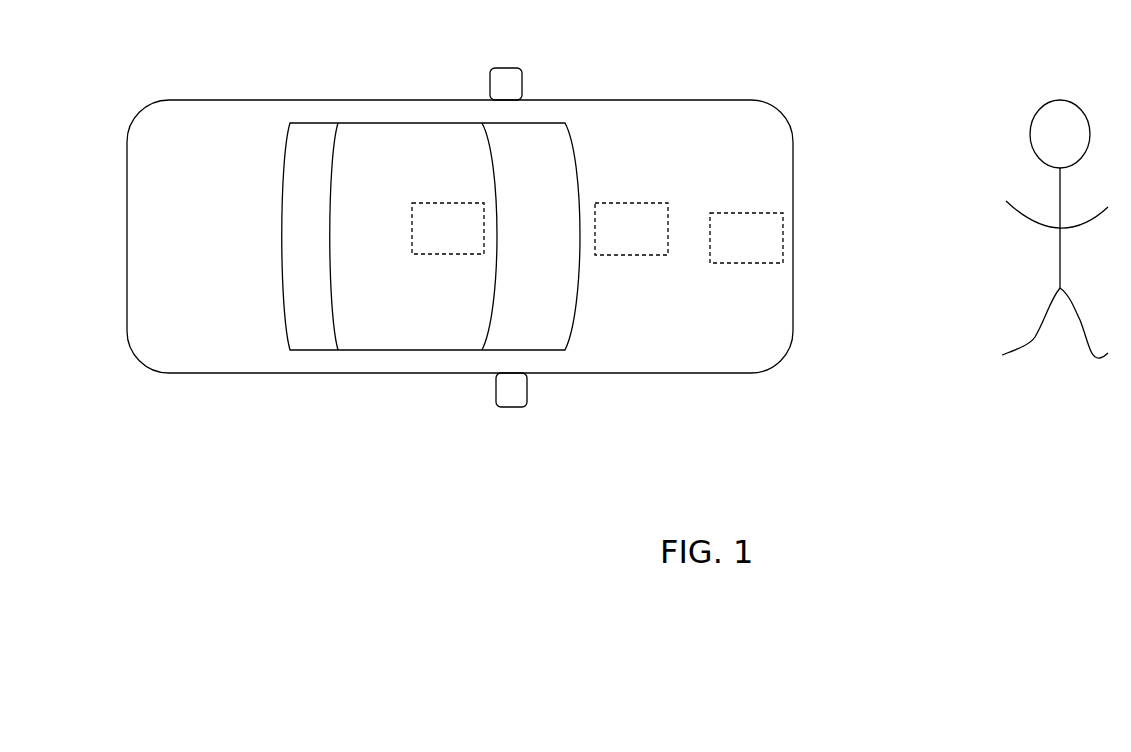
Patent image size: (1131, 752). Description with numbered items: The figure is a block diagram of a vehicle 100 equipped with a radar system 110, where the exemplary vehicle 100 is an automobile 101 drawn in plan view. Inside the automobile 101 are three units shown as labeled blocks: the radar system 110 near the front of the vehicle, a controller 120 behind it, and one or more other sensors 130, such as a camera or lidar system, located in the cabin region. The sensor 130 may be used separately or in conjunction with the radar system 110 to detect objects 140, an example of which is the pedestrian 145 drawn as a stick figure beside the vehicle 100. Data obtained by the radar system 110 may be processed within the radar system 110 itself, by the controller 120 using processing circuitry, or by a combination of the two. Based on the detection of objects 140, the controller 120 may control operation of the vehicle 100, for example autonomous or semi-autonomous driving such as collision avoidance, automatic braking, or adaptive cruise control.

The vehicle 100 is at (208, 373).
The automobile 101 is at (460, 260).
The radar system 110 is at (770, 253).
The controller 120 is at (655, 242).
The sensor 130 is at (475, 243).
The object 140 is at (1024, 78).
The pedestrian 145 is at (1033, 192).